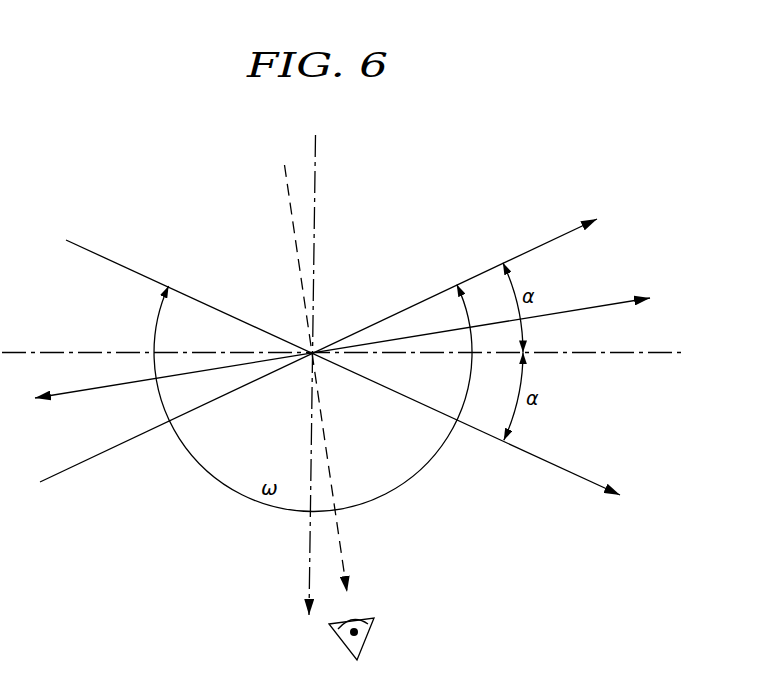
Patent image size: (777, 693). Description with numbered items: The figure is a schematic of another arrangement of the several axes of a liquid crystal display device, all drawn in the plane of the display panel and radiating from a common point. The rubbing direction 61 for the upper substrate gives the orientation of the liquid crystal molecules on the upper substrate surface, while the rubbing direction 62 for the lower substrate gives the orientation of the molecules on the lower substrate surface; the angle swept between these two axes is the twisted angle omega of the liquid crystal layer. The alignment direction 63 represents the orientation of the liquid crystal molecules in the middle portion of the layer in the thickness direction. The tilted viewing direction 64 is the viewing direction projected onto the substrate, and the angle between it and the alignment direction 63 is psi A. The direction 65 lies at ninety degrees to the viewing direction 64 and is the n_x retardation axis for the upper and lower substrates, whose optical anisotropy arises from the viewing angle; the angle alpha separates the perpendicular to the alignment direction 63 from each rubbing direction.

The rubbing direction for upper substrate 61 is at (573, 474).
The rubbing direction for lower substrate 62 is at (535, 246).
The alignment direction of the liquid crystal molecules in the middle portion 63 is at (310, 580).
The tilted viewing direction projected onto substrate 64 is at (345, 567).
The direction perpendicular to viewing direction 65 is at (612, 301).